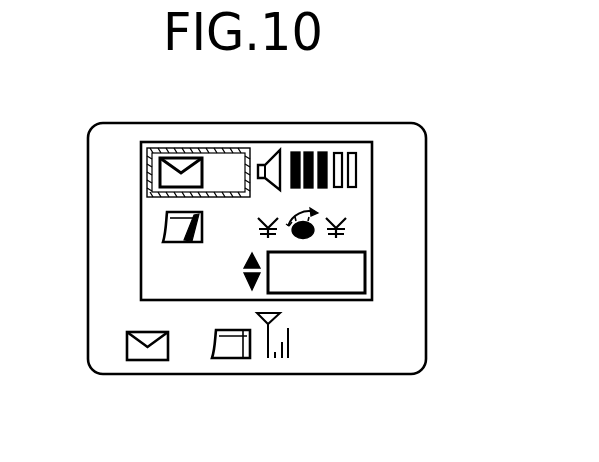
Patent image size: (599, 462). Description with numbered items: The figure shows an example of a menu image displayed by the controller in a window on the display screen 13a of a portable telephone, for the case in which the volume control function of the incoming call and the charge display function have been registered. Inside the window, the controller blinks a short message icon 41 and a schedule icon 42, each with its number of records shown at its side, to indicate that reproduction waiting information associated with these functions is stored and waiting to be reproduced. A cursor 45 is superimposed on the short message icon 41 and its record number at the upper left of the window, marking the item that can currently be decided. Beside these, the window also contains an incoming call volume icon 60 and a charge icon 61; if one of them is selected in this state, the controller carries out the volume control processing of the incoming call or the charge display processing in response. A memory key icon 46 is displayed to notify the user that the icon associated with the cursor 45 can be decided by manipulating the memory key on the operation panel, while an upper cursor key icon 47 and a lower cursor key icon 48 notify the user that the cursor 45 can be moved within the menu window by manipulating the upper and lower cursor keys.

The display screen 13a is at (365, 122).
The short message icon 41 is at (160, 178).
The cursor 45 is at (148, 198).
The schedule icon 42 is at (163, 243).
The incoming call volume icon 60 is at (332, 148).
The charge icon 61 is at (355, 218).
The memory key icon 46 is at (367, 273).
The upper cursor key icon 47 is at (247, 261).
The lower cursor key icon 48 is at (260, 283).